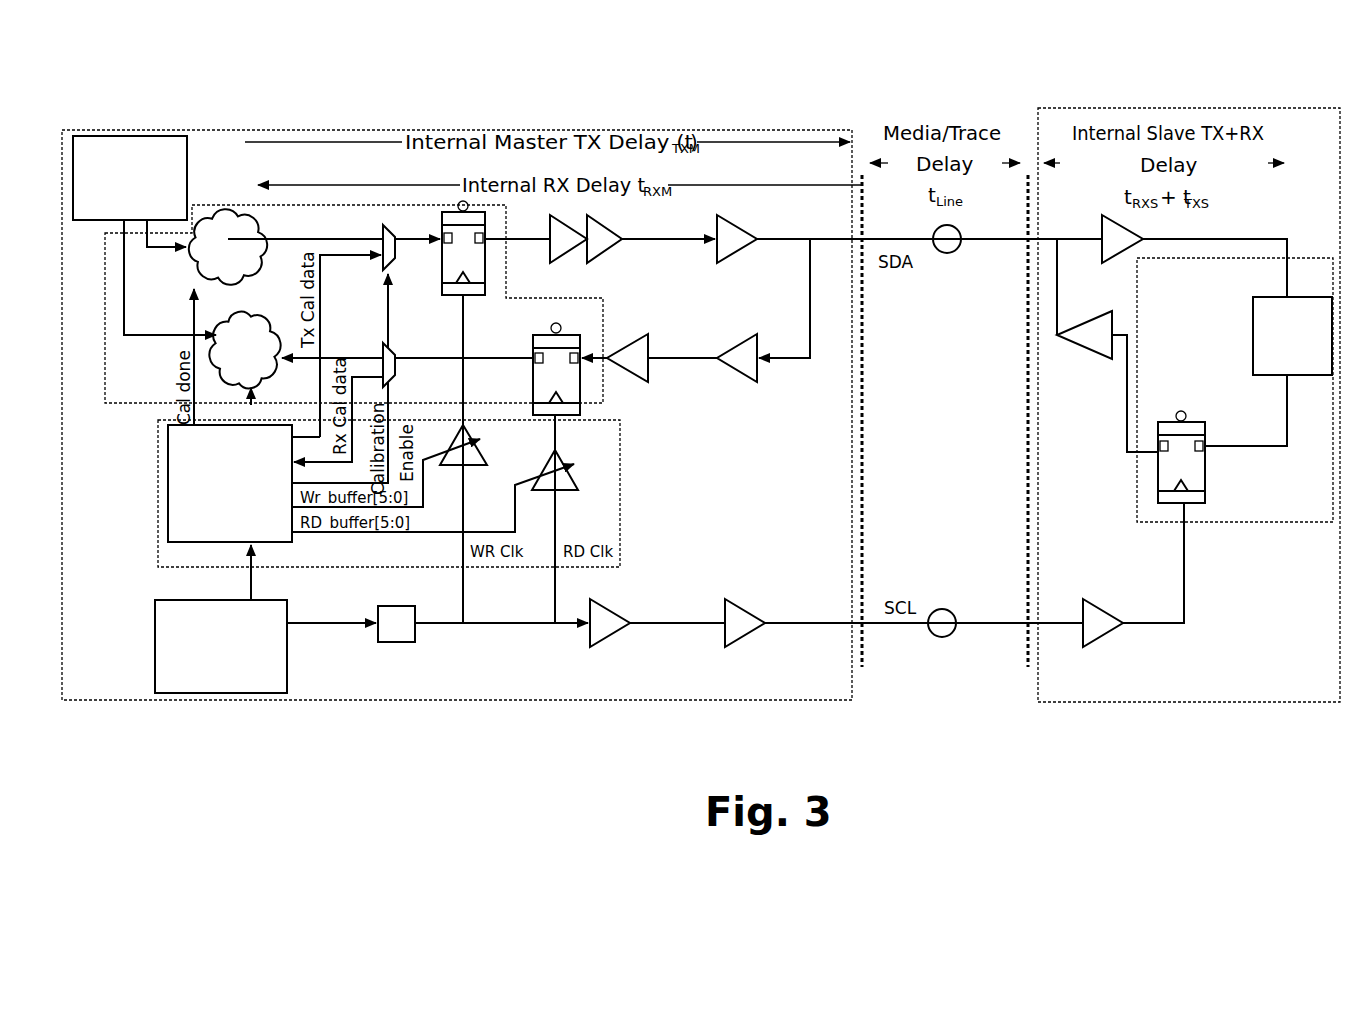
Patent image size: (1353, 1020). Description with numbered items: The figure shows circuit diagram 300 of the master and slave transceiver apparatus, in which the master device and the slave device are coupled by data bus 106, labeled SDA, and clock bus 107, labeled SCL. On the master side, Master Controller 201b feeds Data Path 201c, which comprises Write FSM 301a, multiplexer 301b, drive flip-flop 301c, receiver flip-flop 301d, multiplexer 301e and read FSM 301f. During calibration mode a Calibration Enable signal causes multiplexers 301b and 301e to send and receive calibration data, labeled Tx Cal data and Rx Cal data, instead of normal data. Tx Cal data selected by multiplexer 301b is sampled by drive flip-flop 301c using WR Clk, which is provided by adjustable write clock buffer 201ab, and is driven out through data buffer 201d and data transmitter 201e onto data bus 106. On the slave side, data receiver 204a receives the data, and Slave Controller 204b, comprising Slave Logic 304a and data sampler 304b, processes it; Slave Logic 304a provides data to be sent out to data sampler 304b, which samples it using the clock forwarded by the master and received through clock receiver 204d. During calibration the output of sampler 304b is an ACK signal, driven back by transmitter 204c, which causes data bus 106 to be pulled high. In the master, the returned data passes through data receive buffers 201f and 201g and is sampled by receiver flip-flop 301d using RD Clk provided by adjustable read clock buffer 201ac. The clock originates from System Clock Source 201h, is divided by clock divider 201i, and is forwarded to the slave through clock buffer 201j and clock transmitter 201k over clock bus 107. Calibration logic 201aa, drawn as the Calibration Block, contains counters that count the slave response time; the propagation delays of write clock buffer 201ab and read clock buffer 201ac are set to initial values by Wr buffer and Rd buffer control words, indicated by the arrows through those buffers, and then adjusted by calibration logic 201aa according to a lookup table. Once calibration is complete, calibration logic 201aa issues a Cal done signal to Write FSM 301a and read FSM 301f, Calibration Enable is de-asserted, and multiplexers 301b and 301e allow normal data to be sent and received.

The circuit diagram 300 is at (992, 72).
The data bus 106 is at (947, 254).
The clock bus 107 is at (950, 636).
The Master Controller 201b is at (95, 212).
The Data Path 201c is at (105, 405).
The finite state machine 301a is at (198, 252).
The read FSM 301f is at (252, 322).
The multiplexer 301b is at (397, 247).
The multiplexer 301e is at (382, 346).
The drive flip-flop 301c is at (488, 286).
The receiver flip-flop 301d is at (553, 383).
The data buffer 201d is at (613, 240).
The data transmitter 201e is at (723, 240).
The data receive buffer 201f is at (747, 373).
The data receive buffer 201g is at (647, 365).
The calibration logic 201aa is at (197, 513).
The adjustable write clock buffer 201ab is at (462, 462).
The adjustable read clock buffer 201ac is at (580, 490).
The System Clock Source 201h is at (167, 685).
The clock divider 201i is at (397, 640).
The clock buffer 201j is at (600, 613).
The clock transmitter 201k is at (740, 614).
The data receiver 204a is at (1115, 240).
The Slave Controller 204b is at (1290, 525).
The transmitter 204c is at (1102, 332).
The clock receiver 204d is at (1093, 617).
The Slave Logic 304a is at (1252, 338).
The data sampler 304b is at (1208, 475).